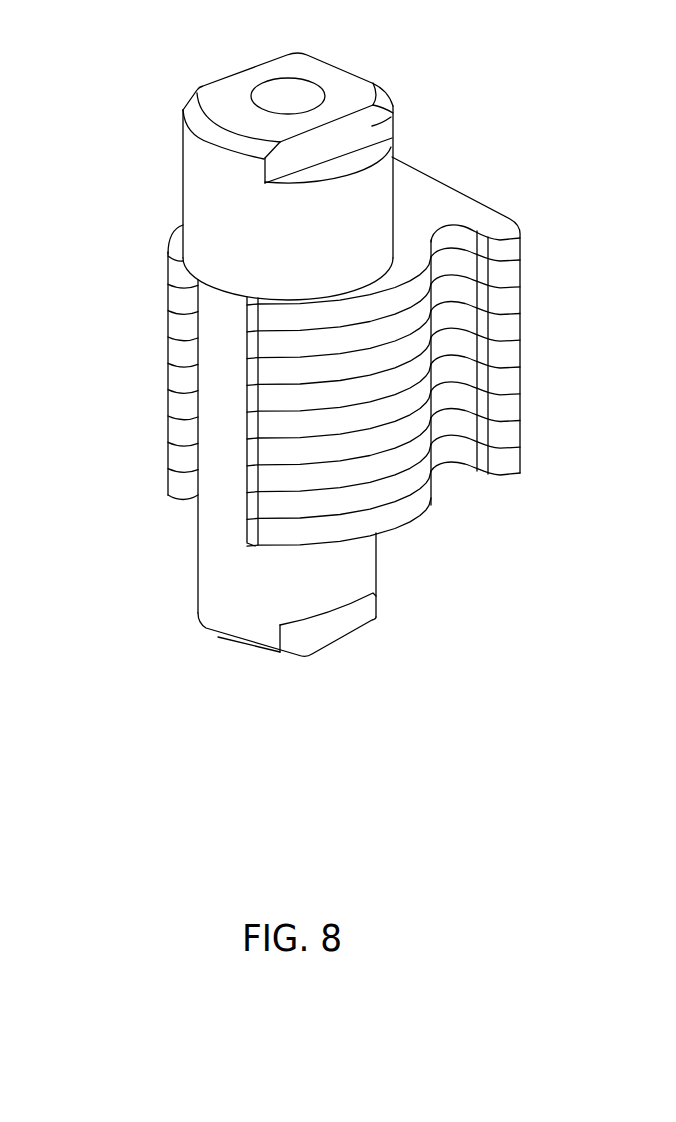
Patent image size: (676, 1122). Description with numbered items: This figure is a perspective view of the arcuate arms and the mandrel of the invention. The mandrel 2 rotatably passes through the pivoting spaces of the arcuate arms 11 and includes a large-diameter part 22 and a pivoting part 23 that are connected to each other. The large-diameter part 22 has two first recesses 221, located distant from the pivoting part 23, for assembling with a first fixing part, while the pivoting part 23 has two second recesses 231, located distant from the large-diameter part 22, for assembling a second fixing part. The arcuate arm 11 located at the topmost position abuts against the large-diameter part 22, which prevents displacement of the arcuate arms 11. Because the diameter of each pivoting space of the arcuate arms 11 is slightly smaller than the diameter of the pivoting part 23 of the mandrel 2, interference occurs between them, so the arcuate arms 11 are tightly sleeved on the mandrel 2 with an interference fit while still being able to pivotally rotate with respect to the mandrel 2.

The mandrel 2 is at (395, 512).
The arcuate arm 11 is at (456, 203).
The large-diameter part 22 is at (207, 197).
The first recess 221 is at (372, 125).
The pivoting part 23 is at (210, 584).
The second recess 231 is at (328, 640).